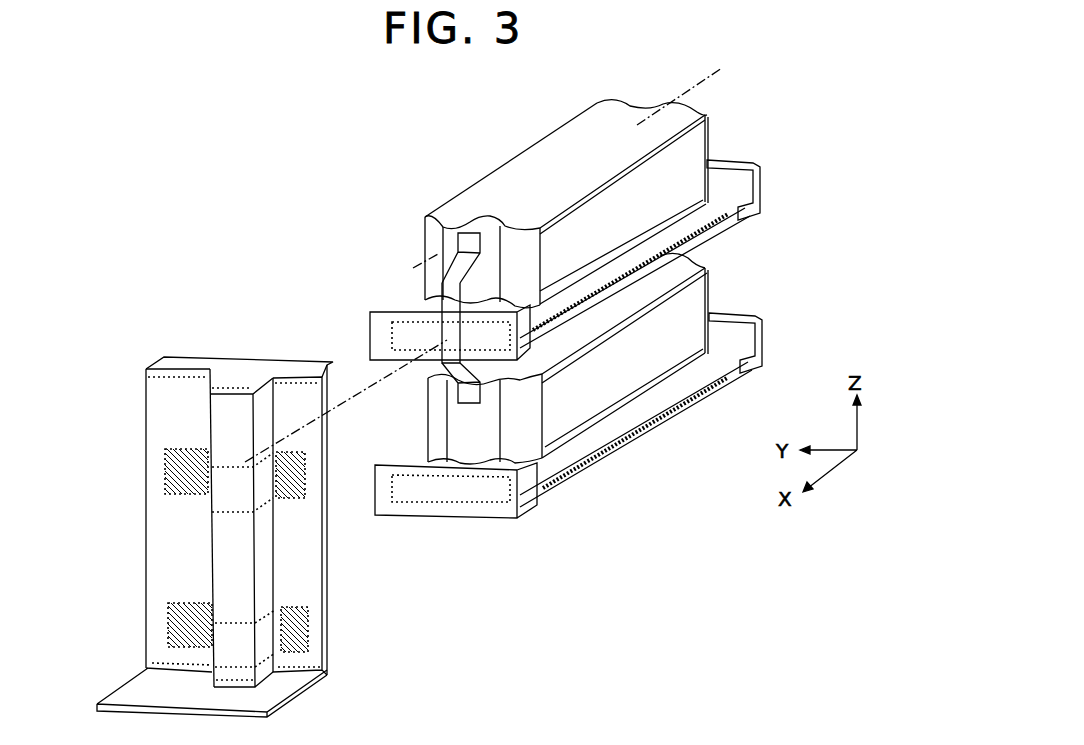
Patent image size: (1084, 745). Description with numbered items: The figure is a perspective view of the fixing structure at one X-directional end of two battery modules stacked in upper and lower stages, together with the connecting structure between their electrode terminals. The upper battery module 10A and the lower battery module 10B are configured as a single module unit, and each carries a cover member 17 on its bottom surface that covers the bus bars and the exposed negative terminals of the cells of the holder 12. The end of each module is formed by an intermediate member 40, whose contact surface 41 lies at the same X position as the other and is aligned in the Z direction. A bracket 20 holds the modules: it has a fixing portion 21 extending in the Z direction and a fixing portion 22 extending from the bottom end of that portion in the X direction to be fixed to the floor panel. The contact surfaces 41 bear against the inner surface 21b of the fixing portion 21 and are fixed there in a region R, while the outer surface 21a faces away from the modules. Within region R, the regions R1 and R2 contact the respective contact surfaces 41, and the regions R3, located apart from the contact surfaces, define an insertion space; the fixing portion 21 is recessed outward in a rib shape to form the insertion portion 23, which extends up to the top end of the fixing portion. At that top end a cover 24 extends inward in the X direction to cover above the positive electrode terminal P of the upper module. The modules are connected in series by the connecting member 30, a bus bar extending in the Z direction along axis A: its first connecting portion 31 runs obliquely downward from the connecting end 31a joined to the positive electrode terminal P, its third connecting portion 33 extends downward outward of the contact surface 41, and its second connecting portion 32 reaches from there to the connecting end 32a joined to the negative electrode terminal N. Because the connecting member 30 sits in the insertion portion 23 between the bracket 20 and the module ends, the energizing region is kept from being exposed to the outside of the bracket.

The upper battery module 10A is at (707, 139).
The lower battery module 10B is at (707, 289).
The holder 12 is at (425, 300).
The cover member 17 is at (720, 225).
The bracket 20 is at (215, 510).
The fixing portion 21 is at (148, 557).
The outer surface 21a is at (160, 580).
The inner surface 21b is at (327, 633).
The fixing portion 22 is at (120, 687).
The insertion portion 23 is at (212, 546).
The cover 24 is at (243, 367).
The connecting member 30 is at (467, 339).
The first connecting portion 31 is at (472, 262).
The connecting end 31a is at (495, 217).
The second connecting portion 32 is at (482, 386).
The connecting end 32a is at (487, 392).
The third connecting portion 33 is at (447, 343).
The intermediate member 40 is at (570, 364).
The contact surface 41 is at (370, 342).
The region R is at (221, 530).
The region R1 is at (165, 452).
The region R2 is at (306, 467).
The region R3 is at (235, 498).
The positive electrode terminal P is at (456, 240).
The negative electrode terminal N is at (456, 398).
The axis A is at (487, 261).